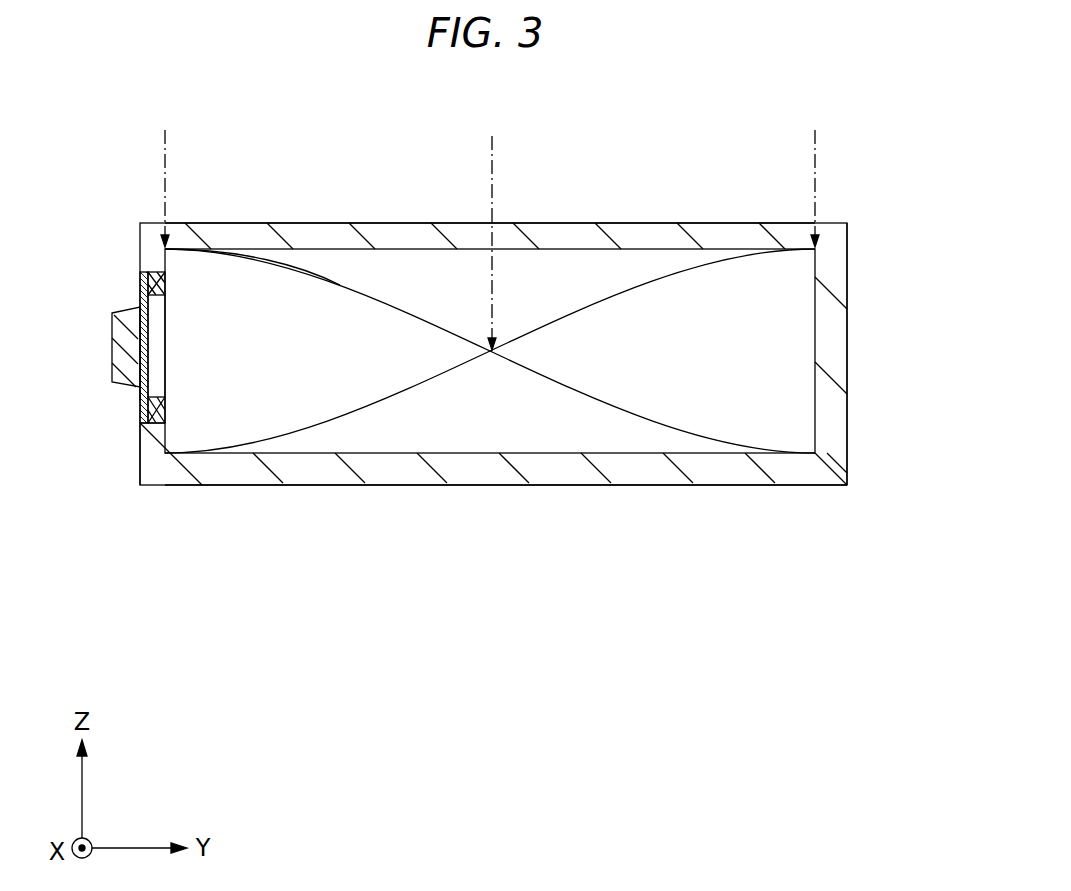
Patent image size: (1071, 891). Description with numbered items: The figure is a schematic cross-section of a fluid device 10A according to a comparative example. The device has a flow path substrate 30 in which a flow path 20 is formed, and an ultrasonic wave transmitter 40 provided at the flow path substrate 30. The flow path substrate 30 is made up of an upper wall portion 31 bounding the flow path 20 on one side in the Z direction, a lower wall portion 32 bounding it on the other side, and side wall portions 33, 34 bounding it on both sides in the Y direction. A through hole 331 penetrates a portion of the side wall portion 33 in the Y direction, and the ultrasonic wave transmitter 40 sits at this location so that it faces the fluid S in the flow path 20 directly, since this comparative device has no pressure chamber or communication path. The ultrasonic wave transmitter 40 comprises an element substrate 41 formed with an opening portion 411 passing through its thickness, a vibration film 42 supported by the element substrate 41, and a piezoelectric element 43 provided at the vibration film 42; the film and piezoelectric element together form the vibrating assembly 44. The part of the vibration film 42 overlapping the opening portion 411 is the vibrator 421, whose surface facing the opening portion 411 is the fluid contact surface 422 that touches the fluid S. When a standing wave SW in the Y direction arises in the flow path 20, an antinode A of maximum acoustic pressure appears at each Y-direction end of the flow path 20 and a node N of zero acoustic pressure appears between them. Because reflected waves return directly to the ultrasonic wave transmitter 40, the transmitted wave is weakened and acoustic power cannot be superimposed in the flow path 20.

The fluid device 10A is at (275, 118).
The flow path 20 is at (415, 253).
The flow path substrate 30 is at (444, 222).
The upper wall portion 31 is at (645, 232).
The lower wall portion 32 is at (690, 470).
The side wall portion 33 is at (152, 445).
The through hole 331 is at (148, 410).
The side wall portion 34 is at (835, 417).
The ultrasonic wave transmitter 40 is at (72, 200).
The element substrate 41 is at (153, 272).
The opening portion 411 is at (160, 300).
The vibration film 42 is at (140, 282).
The vibrator 421 is at (140, 392).
The fluid contact surface 422 is at (148, 348).
The piezoelectric element 43 is at (108, 350).
The pressing assembly 44 is at (127, 282).
The standing wave SW is at (318, 272).
The fluid S is at (553, 270).
The node N is at (493, 229).
The antinode A is at (491, 175).